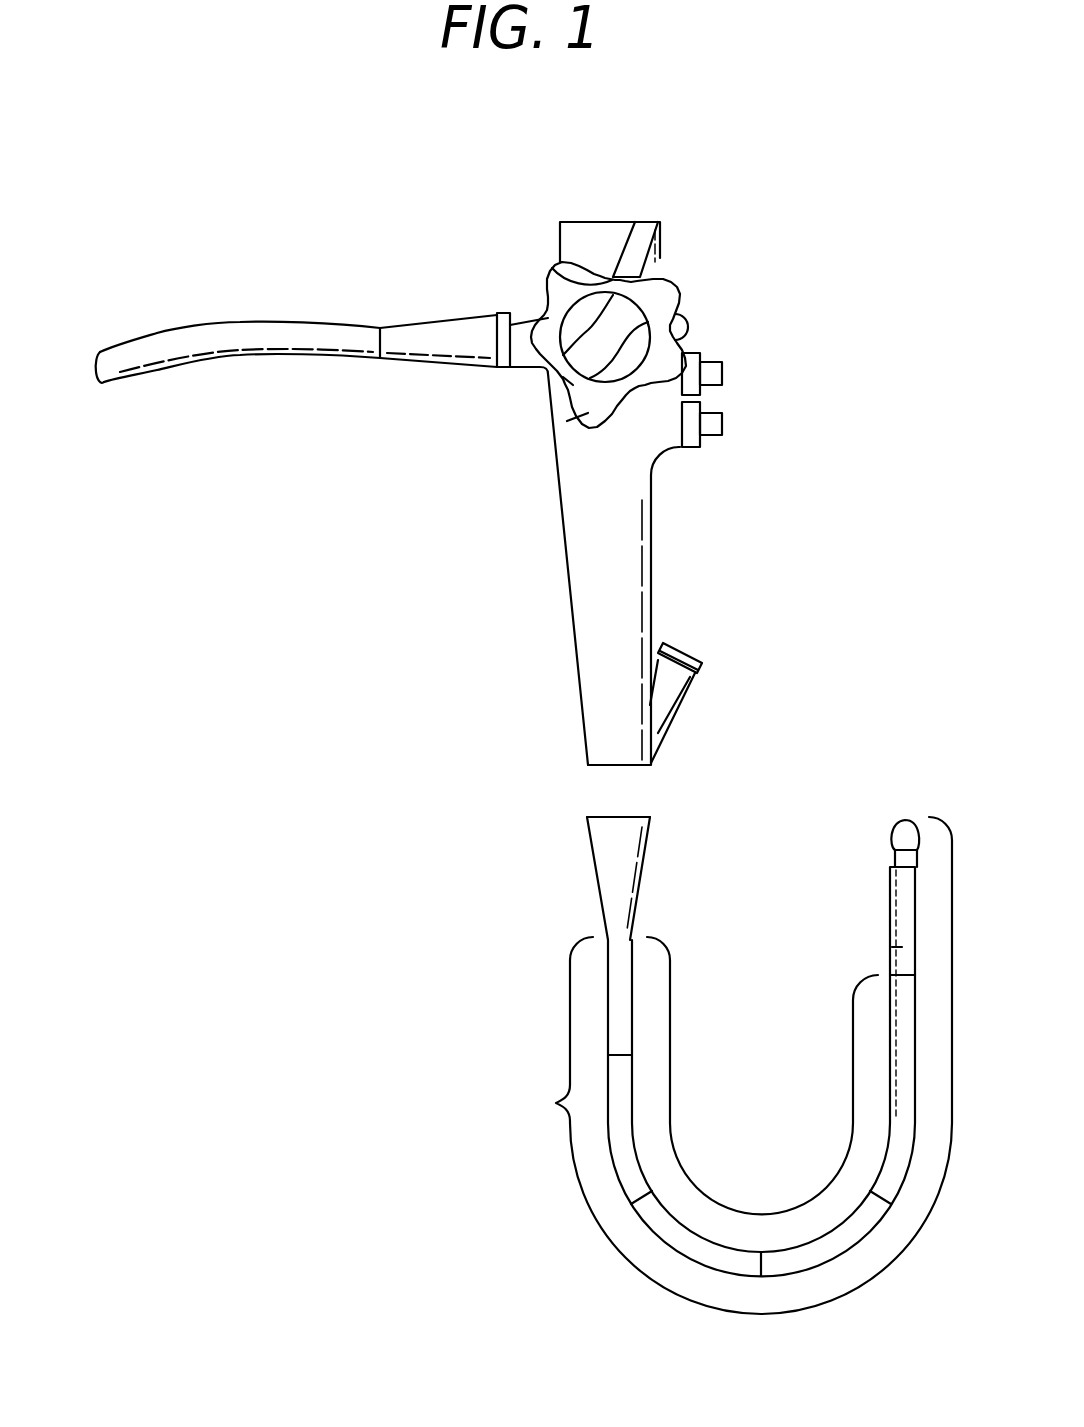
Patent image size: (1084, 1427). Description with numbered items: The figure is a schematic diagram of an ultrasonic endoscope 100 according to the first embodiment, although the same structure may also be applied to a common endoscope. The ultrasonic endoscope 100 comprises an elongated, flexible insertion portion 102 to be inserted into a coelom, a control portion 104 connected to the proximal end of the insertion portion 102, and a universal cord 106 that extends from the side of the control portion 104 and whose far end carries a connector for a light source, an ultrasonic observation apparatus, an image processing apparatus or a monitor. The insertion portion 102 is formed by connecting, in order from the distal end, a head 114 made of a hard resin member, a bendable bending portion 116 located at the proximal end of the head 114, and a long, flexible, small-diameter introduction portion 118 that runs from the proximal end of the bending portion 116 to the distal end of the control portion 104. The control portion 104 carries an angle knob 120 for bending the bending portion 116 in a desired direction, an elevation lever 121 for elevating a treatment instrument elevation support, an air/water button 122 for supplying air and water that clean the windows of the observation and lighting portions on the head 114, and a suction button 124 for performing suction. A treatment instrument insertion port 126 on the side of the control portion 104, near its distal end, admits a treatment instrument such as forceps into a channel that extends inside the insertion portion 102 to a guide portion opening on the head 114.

The ultrasonic endoscope 100 is at (276, 222).
The insertion portion 102 is at (721, 1065).
The control portion 104 is at (775, 217).
The universal cord 106 is at (153, 346).
The head 114 is at (896, 857).
The bending portion 116 is at (897, 947).
The introduction portion 118 is at (670, 1085).
The angle knob 120 is at (572, 392).
The elevation lever 121 is at (658, 227).
The air/water button 122 is at (722, 431).
The suction button 124 is at (723, 368).
The treatment instrument insertion port 126 is at (690, 643).